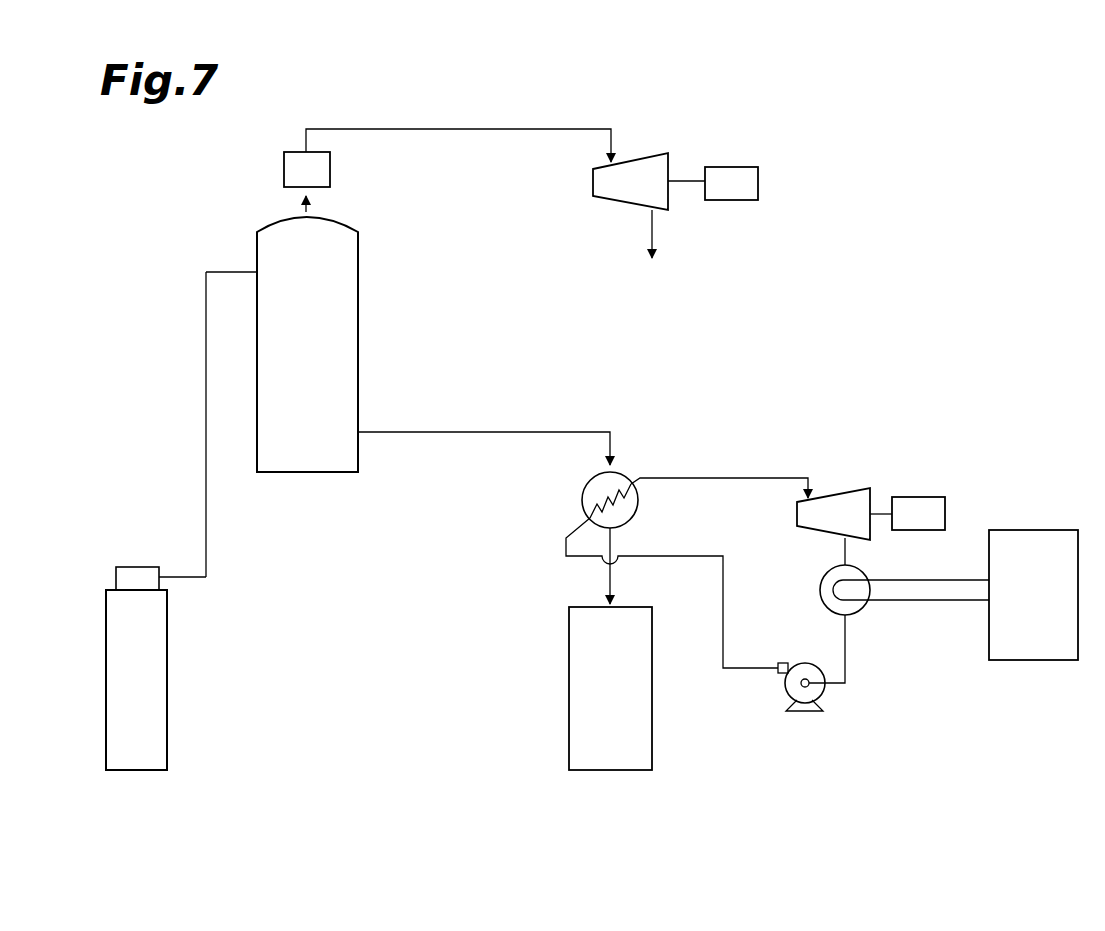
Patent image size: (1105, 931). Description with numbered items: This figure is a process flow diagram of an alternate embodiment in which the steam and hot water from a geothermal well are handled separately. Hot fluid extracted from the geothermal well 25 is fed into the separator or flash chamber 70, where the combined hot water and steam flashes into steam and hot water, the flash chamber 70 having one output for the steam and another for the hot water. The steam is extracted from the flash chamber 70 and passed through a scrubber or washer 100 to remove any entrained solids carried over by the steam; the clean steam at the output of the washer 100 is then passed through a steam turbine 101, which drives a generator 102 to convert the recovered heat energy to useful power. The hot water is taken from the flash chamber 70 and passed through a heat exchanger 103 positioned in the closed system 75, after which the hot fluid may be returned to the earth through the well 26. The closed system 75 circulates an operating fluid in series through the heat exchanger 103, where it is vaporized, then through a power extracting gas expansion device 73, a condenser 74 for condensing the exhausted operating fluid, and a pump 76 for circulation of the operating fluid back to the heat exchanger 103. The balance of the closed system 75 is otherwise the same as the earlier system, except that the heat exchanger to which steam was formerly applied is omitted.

The separator or flash chamber 70 is at (360, 292).
The scrubber or washer 100 is at (331, 172).
The steam turbine 101 is at (648, 162).
The generator 102 is at (740, 166).
The geothermal well 25 is at (155, 670).
The heat exchanger 103 is at (624, 479).
The well 26 is at (580, 650).
The closed system 75 is at (742, 532).
The power extracting gas expansion device 73 is at (852, 490).
The condenser 74 is at (858, 612).
The pump 76 is at (826, 699).